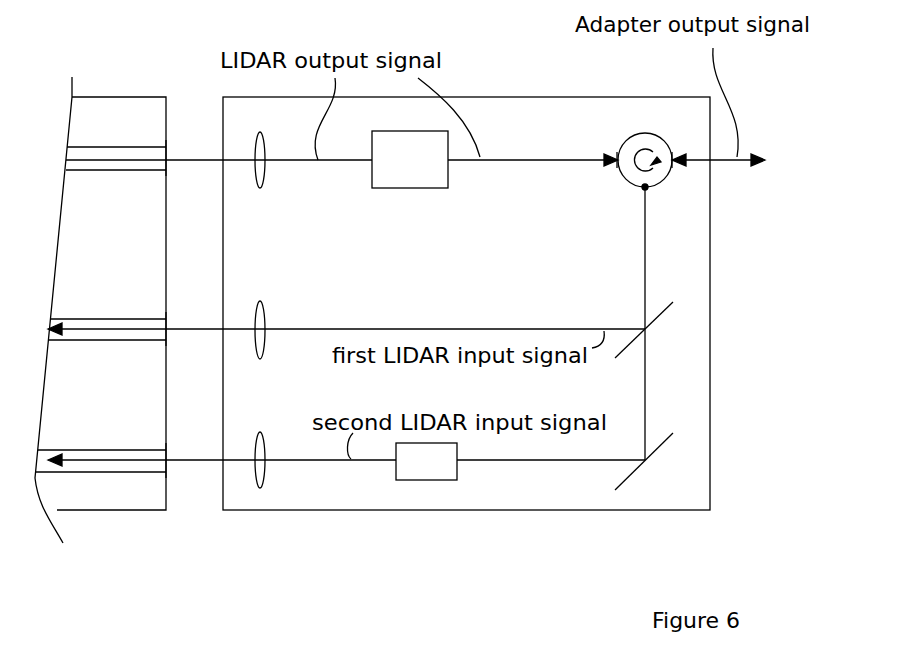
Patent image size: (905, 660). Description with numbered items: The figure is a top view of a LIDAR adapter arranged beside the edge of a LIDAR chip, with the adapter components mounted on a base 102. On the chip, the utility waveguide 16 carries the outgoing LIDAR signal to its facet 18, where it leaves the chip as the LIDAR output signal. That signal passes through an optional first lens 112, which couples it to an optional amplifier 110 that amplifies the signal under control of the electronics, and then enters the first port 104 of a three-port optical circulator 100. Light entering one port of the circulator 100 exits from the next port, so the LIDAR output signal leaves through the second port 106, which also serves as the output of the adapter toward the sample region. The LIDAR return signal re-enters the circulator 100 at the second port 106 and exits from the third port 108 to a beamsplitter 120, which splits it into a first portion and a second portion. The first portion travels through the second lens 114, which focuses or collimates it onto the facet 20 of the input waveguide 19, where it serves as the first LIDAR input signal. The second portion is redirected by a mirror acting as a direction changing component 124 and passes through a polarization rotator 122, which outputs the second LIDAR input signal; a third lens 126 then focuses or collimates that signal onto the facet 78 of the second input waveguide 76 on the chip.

The utility waveguide 16 is at (118, 147).
The facet 18 is at (166, 153).
The input waveguide 19 is at (110, 318).
The facet 20 is at (166, 322).
The second input waveguide 76 is at (110, 449).
The facet 78 is at (166, 453).
The circulator 100 is at (626, 123).
The base 102 is at (558, 97).
The first port 104 is at (618, 168).
The second port 106 is at (674, 158).
The third port 108 is at (643, 190).
The amplifier 110 is at (402, 188).
The first lens 112 is at (266, 172).
The second lens 114 is at (262, 302).
The beamsplitter 120 is at (662, 312).
The polarization rotator 122 is at (457, 474).
The direction changing component 124 is at (662, 445).
The third lens 126 is at (262, 432).